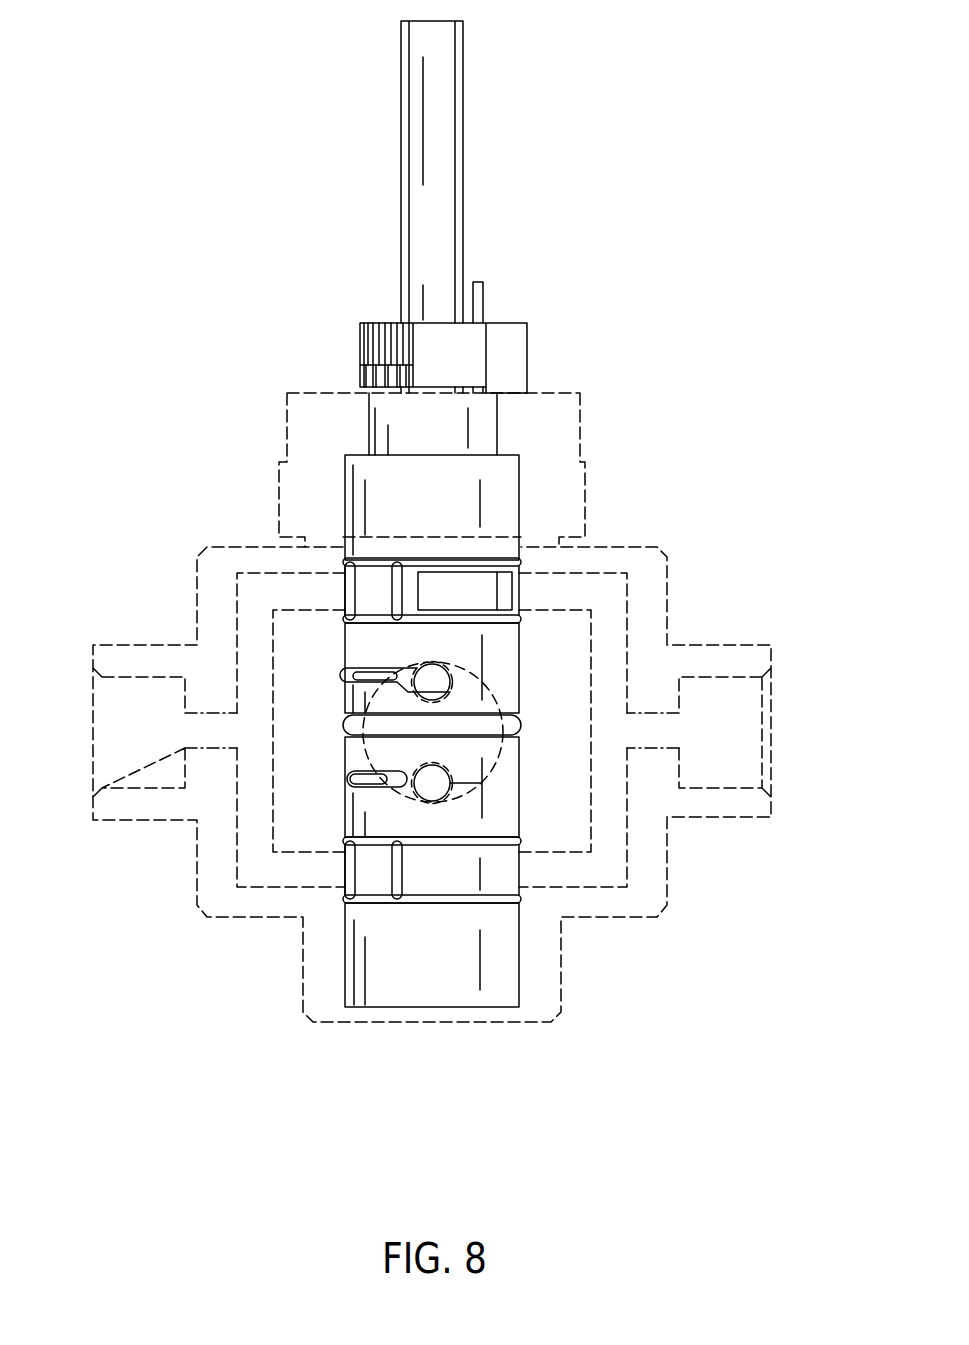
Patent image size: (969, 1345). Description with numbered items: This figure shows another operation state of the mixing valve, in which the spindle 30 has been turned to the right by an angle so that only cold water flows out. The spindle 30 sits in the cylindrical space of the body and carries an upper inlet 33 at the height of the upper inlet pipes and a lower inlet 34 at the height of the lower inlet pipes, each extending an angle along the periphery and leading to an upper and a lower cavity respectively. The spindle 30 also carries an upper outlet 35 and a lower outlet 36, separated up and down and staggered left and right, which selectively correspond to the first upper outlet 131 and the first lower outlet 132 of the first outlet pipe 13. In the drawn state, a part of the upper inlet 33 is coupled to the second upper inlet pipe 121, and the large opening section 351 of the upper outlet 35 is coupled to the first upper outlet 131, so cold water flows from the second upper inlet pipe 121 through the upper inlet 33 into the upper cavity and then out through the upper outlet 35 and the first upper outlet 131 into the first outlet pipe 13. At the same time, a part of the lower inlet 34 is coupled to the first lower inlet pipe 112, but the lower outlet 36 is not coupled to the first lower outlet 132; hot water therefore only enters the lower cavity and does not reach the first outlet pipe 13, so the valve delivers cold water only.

The first outlet pipe 13 is at (498, 762).
The first lower inlet pipe 112 is at (237, 868).
The second upper inlet pipe 121 is at (627, 587).
The first upper outlet 131 is at (455, 695).
The first lower outlet 132 is at (453, 798).
The spindle 30 is at (480, 480).
The upper inlet 33 is at (480, 592).
The lower inlet 34 is at (343, 867).
The upper outlet 35 is at (347, 677).
The large opening section 351 is at (383, 681).
The lower outlet 36 is at (347, 775).